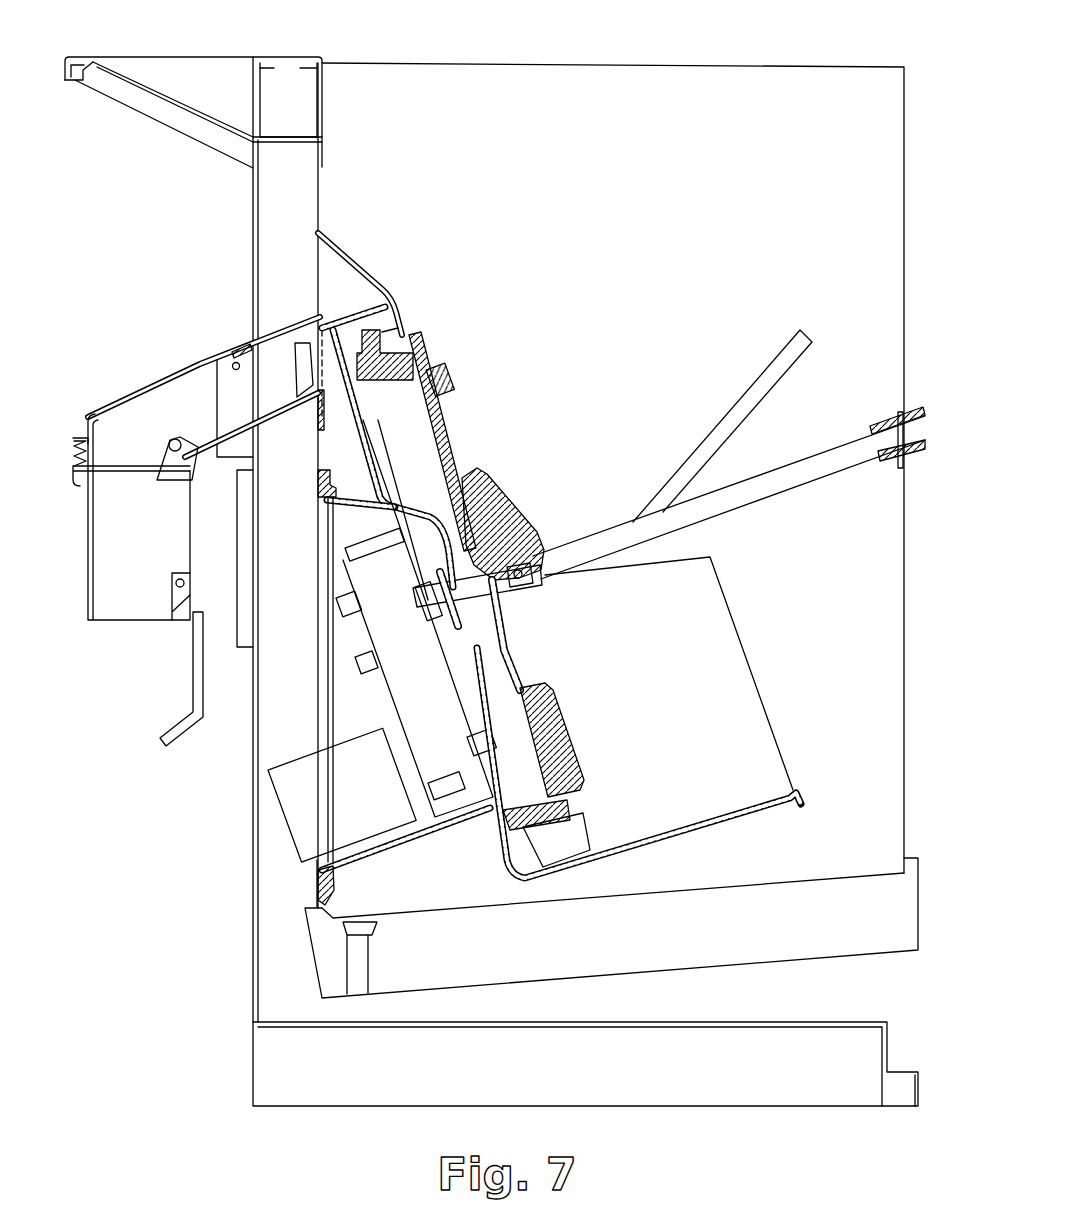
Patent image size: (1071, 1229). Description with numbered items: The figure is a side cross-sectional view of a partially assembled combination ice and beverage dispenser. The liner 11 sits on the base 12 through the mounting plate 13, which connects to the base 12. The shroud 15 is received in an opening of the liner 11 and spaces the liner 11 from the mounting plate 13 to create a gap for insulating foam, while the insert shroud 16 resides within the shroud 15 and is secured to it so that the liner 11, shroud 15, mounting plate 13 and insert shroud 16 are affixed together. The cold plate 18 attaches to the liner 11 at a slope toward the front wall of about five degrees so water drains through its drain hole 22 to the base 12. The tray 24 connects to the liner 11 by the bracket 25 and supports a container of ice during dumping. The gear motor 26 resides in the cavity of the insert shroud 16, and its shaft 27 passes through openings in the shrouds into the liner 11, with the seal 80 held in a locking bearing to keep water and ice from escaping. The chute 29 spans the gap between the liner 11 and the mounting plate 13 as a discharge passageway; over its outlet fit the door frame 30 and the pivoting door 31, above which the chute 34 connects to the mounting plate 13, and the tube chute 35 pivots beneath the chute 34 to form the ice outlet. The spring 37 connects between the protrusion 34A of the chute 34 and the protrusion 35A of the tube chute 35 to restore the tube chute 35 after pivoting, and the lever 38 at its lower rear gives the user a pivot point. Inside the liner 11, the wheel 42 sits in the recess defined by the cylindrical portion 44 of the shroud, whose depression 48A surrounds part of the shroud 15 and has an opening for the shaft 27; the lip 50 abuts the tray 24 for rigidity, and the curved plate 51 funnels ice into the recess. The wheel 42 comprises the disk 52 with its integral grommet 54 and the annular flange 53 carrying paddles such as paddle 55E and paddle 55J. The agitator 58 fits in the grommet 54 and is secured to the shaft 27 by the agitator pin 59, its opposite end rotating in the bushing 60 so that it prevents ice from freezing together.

The liner 11 is at (593, 264).
The base 12 is at (561, 1076).
The mounting plate 13 is at (253, 884).
The shroud 15 is at (350, 872).
The insert shroud 16 is at (343, 720).
The cold plate 18 is at (599, 946).
The drain hole 22 is at (370, 968).
The tray 24 is at (173, 57).
The bracket 25 is at (160, 118).
The gear motor 26 is at (334, 811).
The shaft 27 is at (428, 600).
The chute 29 is at (260, 345).
The door frame 30 is at (240, 349).
The door 31 is at (217, 405).
The chute 34 is at (118, 446).
The protrusion 34A is at (74, 440).
The tube chute 35 is at (118, 566).
The protrusion 35A is at (84, 487).
The spring 37 is at (76, 467).
The lever 38 is at (200, 668).
The wheel 42 is at (445, 434).
The cylindrical portion 44 is at (500, 838).
The depression 48A is at (410, 503).
The lip 50 is at (342, 262).
The curved plate 51 is at (638, 714).
The disk 52 is at (520, 653).
The annular flange 53 is at (393, 350).
The grommet 54 is at (507, 542).
The paddle 55E is at (575, 840).
The paddle 55J is at (398, 333).
The agitator 58 is at (736, 506).
The agitator pin 59 is at (530, 573).
The bushing 60 is at (896, 425).
The seal 80 is at (444, 628).